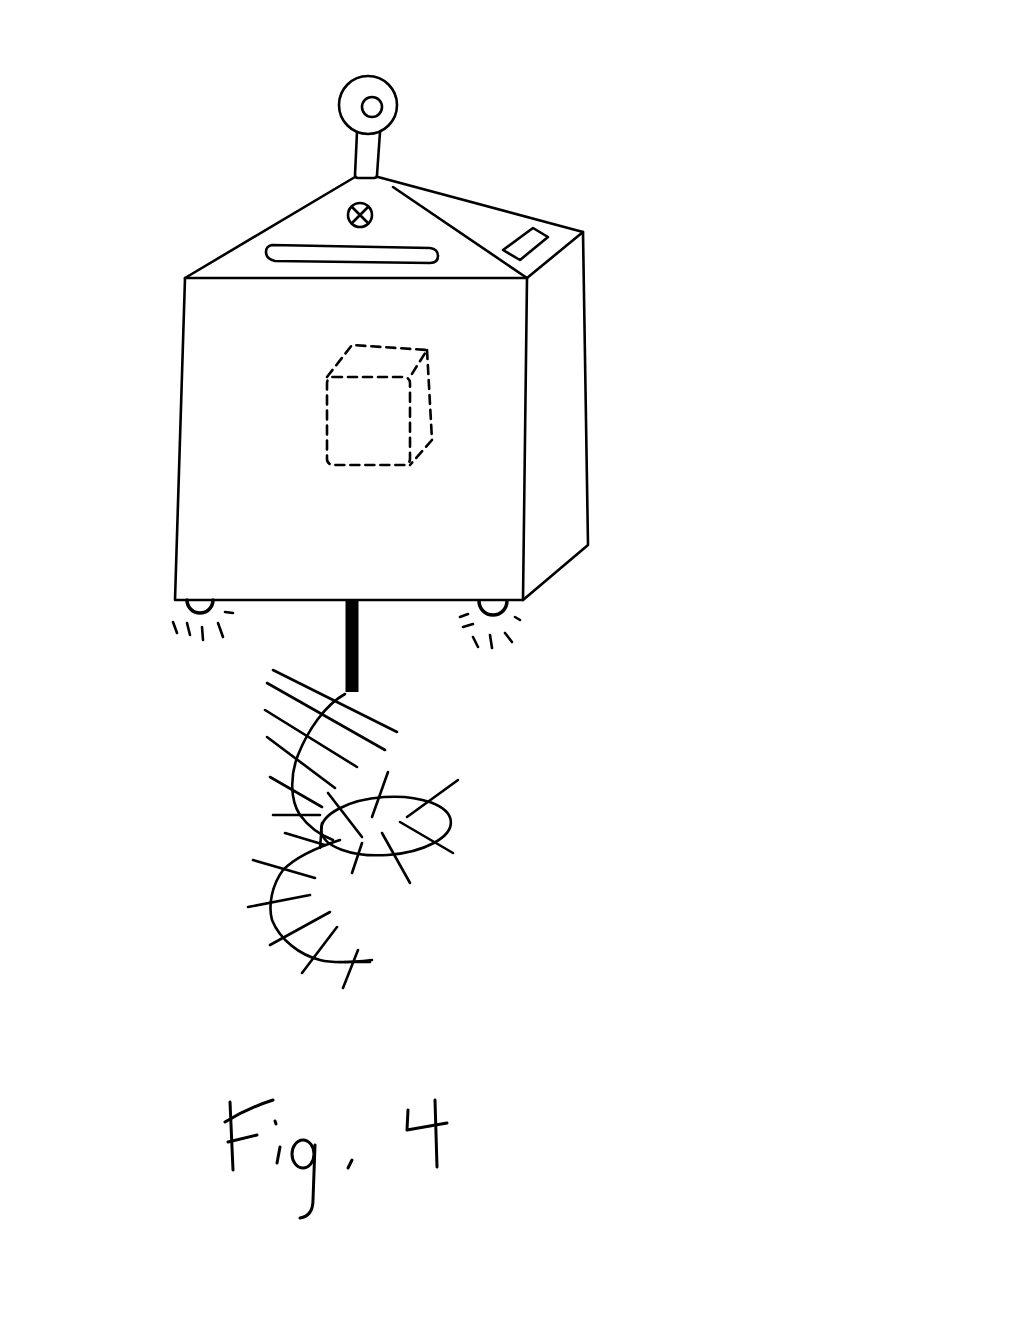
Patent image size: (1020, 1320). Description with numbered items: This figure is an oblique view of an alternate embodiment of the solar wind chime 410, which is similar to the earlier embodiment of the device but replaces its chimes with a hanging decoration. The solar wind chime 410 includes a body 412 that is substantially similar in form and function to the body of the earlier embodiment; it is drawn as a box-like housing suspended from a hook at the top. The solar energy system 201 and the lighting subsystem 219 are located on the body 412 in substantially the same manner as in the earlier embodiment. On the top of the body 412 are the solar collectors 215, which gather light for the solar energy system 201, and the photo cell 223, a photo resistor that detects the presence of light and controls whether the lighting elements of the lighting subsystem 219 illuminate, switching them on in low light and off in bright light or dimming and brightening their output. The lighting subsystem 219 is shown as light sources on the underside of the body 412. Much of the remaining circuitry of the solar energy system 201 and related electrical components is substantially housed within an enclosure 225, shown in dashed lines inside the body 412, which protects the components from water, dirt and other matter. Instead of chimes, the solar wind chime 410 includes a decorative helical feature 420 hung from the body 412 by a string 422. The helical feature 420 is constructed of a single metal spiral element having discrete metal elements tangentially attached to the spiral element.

The solar wind chime 410 is at (704, 138).
The body 412 is at (600, 343).
The photo cell 223 is at (375, 205).
The solar collector 215 is at (295, 252).
The enclosure 225 is at (360, 423).
The solar energy system 201 is at (318, 452).
The lighting subsystem 219 is at (183, 612).
The string 422 is at (347, 636).
The decorative helical feature 420 is at (447, 813).